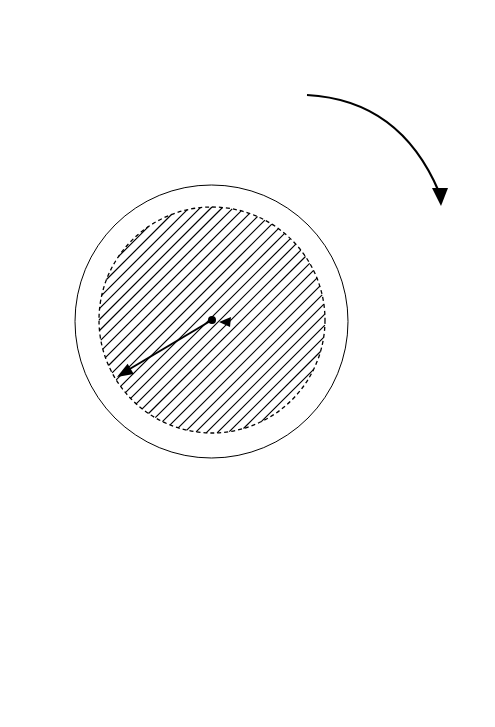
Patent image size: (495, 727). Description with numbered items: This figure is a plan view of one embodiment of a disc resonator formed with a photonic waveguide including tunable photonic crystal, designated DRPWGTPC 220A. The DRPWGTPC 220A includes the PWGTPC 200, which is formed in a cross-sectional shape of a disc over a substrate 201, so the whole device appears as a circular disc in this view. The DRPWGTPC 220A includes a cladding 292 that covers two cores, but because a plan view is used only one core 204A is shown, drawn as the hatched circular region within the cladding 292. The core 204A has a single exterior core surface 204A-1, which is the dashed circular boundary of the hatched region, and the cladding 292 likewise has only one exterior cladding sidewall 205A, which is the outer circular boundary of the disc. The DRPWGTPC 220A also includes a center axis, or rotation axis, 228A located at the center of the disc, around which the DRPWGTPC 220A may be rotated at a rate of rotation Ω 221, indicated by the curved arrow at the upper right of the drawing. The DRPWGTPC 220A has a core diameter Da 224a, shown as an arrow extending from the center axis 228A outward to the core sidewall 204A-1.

The disc resonator including photonic waveguide with tunable photonic crystal (DRPWG 220A is at (228, 53).
The photonic waveguide with tunable photonic crystal (PWGTPC) 200 is at (98, 319).
The substrate 201 is at (214, 335).
The core 204A is at (178, 212).
The core surface 204A-1 is at (290, 402).
The cladding sidewall 205A is at (282, 437).
The cladding 292 is at (338, 293).
The rate of rotation (Ω) 221 is at (403, 128).
The core diameter 224a is at (170, 416).
The core diameter Da is at (173, 346).
The center axis 228A is at (230, 326).